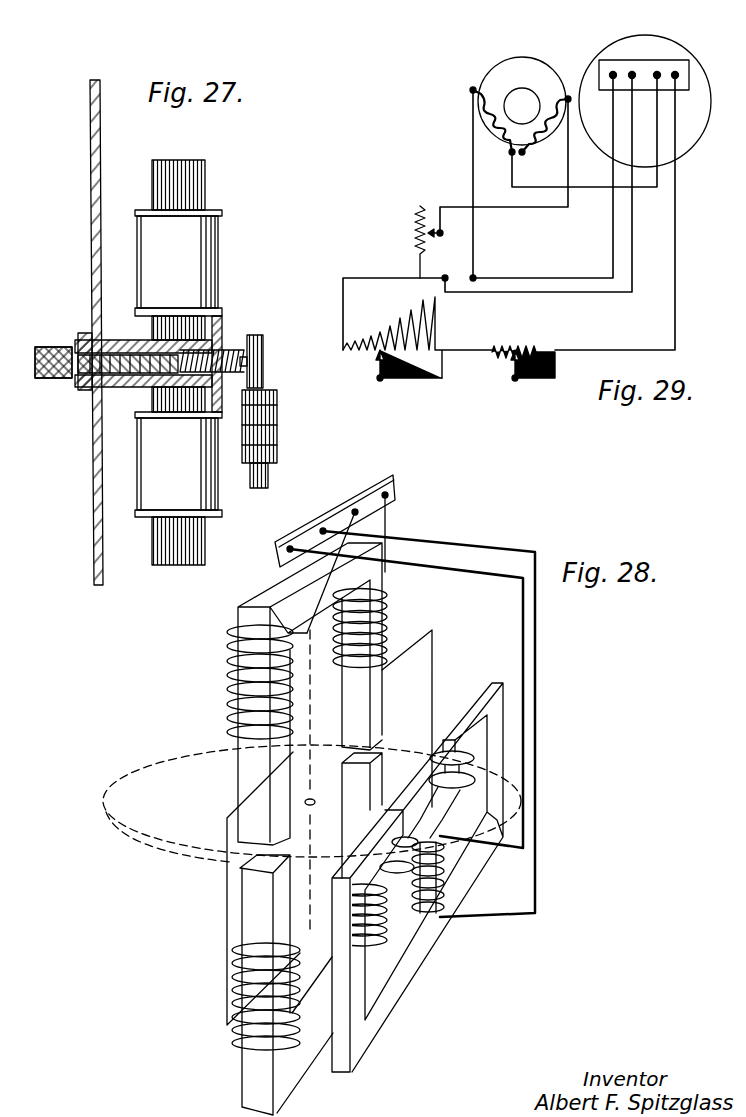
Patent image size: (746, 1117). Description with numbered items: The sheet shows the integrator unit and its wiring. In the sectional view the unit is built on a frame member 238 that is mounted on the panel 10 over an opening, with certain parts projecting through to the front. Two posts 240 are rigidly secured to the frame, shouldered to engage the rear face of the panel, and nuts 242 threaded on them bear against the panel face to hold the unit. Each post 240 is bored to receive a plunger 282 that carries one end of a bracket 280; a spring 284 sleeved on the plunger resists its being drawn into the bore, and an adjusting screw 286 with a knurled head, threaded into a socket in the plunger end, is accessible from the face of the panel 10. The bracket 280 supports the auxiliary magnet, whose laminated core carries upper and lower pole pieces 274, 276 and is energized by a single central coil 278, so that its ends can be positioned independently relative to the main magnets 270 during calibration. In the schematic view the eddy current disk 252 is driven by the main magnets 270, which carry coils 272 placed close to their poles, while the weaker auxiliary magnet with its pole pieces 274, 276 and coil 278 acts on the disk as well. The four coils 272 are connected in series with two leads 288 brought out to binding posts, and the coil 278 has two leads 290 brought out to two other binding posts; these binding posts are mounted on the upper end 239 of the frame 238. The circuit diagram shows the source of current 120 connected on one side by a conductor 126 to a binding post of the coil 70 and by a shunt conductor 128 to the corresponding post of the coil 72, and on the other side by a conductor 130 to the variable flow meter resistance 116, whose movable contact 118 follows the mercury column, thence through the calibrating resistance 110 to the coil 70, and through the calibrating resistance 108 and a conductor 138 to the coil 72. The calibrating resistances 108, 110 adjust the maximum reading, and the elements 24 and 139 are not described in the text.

In FIG. 27, the panel 10 is at (90, 208).
In FIG. 29, the indicating instrument 24 is at (672, 42).
In FIG. 29, the coil 70 is at (492, 132).
In FIG. 29, the coil 72 is at (541, 132).
In FIG. 29, the calibrating resistance 108 is at (415, 230).
In FIG. 29, the calibrating resistance 110 is at (531, 348).
In FIG. 29, the variable flow meter resistance 116 is at (405, 322).
In FIG. 29, the movable contact 118 is at (375, 372).
In FIG. 29, the source of current 120 is at (470, 274).
In FIG. 29, the conductor 126 is at (473, 167).
In FIG. 29, the shunt conductor 128 is at (522, 101).
In FIG. 29, the conductor 130 is at (379, 278).
In FIG. 29, the conductor 138 is at (568, 167).
In FIG. 29, the conductor 139 is at (512, 167).
In FIG. 27, the frame member 238 is at (222, 318).
In FIG. 29, the upper end of bracket 239 is at (614, 64).
In FIG. 28, the upper end of bracket 239 is at (358, 506).
In FIG. 27, the post 240 is at (124, 341).
In FIG. 27, the nut 242 is at (82, 393).
In FIG. 28, the eddy current disk 252 is at (154, 776).
In FIG. 27, the main magnet 270 is at (195, 176).
In FIG. 28, the main magnet 270 is at (375, 726).
In FIG. 27, the coil 272 is at (200, 228).
In FIG. 28, the coil 272 is at (385, 611).
In FIG. 28, the upper pole piece 274 is at (431, 762).
In FIG. 28, the lower pole piece 276 is at (430, 779).
In FIG. 27, the coil 278 is at (270, 420).
In FIG. 28, the coil 278 is at (442, 897).
In FIG. 27, the bracket 280 is at (266, 340).
In FIG. 27, the plunger 282 is at (142, 388).
In FIG. 27, the spring 284 is at (230, 348).
In FIG. 27, the adjusting screw 286 is at (57, 380).
In FIG. 29, the lead 288 is at (613, 94).
In FIG. 28, the lead 288 is at (387, 500).
In FIG. 29, the lead 290 is at (660, 100).
In FIG. 28, the lead 290 is at (452, 566).